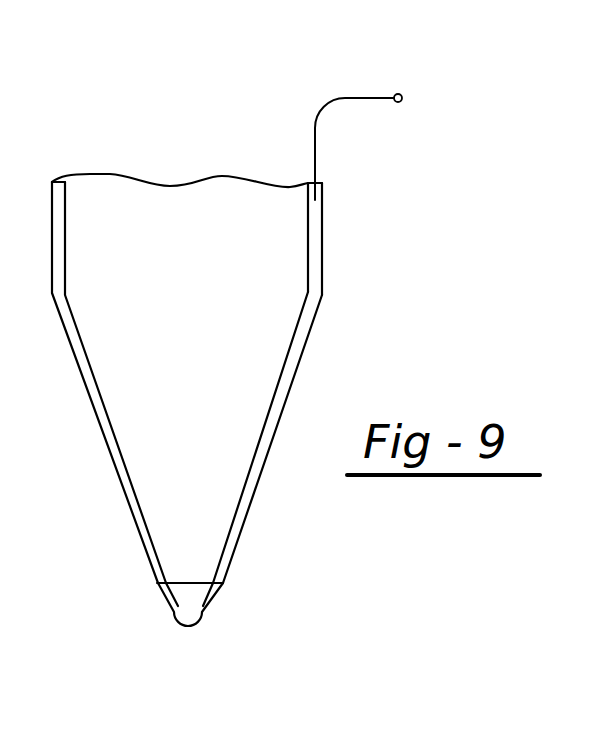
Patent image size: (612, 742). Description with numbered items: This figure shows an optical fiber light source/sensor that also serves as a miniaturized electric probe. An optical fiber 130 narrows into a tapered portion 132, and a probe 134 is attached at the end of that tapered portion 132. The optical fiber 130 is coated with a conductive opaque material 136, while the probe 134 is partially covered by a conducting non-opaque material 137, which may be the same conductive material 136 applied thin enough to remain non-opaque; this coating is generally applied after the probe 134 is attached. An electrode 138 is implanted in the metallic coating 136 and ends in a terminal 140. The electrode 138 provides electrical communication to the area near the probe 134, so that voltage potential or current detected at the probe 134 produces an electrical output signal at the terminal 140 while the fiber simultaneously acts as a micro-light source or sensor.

The optical fiber 130 is at (97, 222).
The tapered portion 132 is at (272, 405).
The probe 134 is at (192, 607).
The conductive opaque material 136 is at (314, 259).
The conducting non-opaque material 137 is at (221, 597).
The electrode 138 is at (315, 162).
The terminal 140 is at (436, 64).